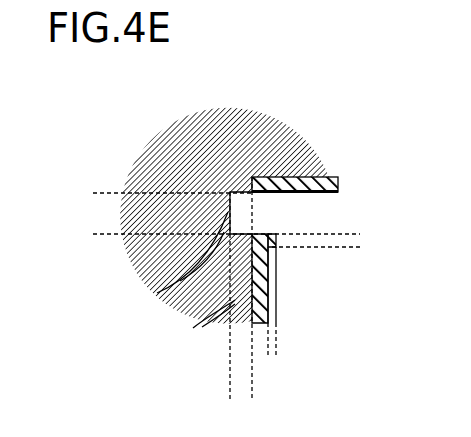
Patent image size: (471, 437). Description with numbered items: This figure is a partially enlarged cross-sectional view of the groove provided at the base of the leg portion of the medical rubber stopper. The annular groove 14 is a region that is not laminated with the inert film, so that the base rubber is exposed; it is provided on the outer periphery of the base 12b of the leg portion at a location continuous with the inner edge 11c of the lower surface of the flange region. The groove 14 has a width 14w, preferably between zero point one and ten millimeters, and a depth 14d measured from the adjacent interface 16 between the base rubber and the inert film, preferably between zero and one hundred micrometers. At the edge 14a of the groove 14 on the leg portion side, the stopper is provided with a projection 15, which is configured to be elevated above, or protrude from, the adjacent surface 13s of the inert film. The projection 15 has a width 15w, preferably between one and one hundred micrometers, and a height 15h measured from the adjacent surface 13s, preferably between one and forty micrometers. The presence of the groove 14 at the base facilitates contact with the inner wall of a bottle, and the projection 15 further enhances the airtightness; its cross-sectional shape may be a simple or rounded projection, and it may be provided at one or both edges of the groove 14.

The groove 14 is at (247, 211).
The inner edge of the lower surface of the flange region 11c is at (247, 168).
The edge on the leg portion side of the groove 14a is at (268, 272).
The projection 15 is at (268, 238).
The adjacent surface of the inert film 13s is at (268, 312).
The base of the leg portion 12b is at (157, 293).
The adjacent interface between the base rubber and the inert film 16 is at (200, 325).
The width of the groove 14w is at (100, 193).
The width of the projection 15w is at (353, 208).
The height of the projection 15h is at (302, 350).
The depth of the groove 14d is at (272, 393).